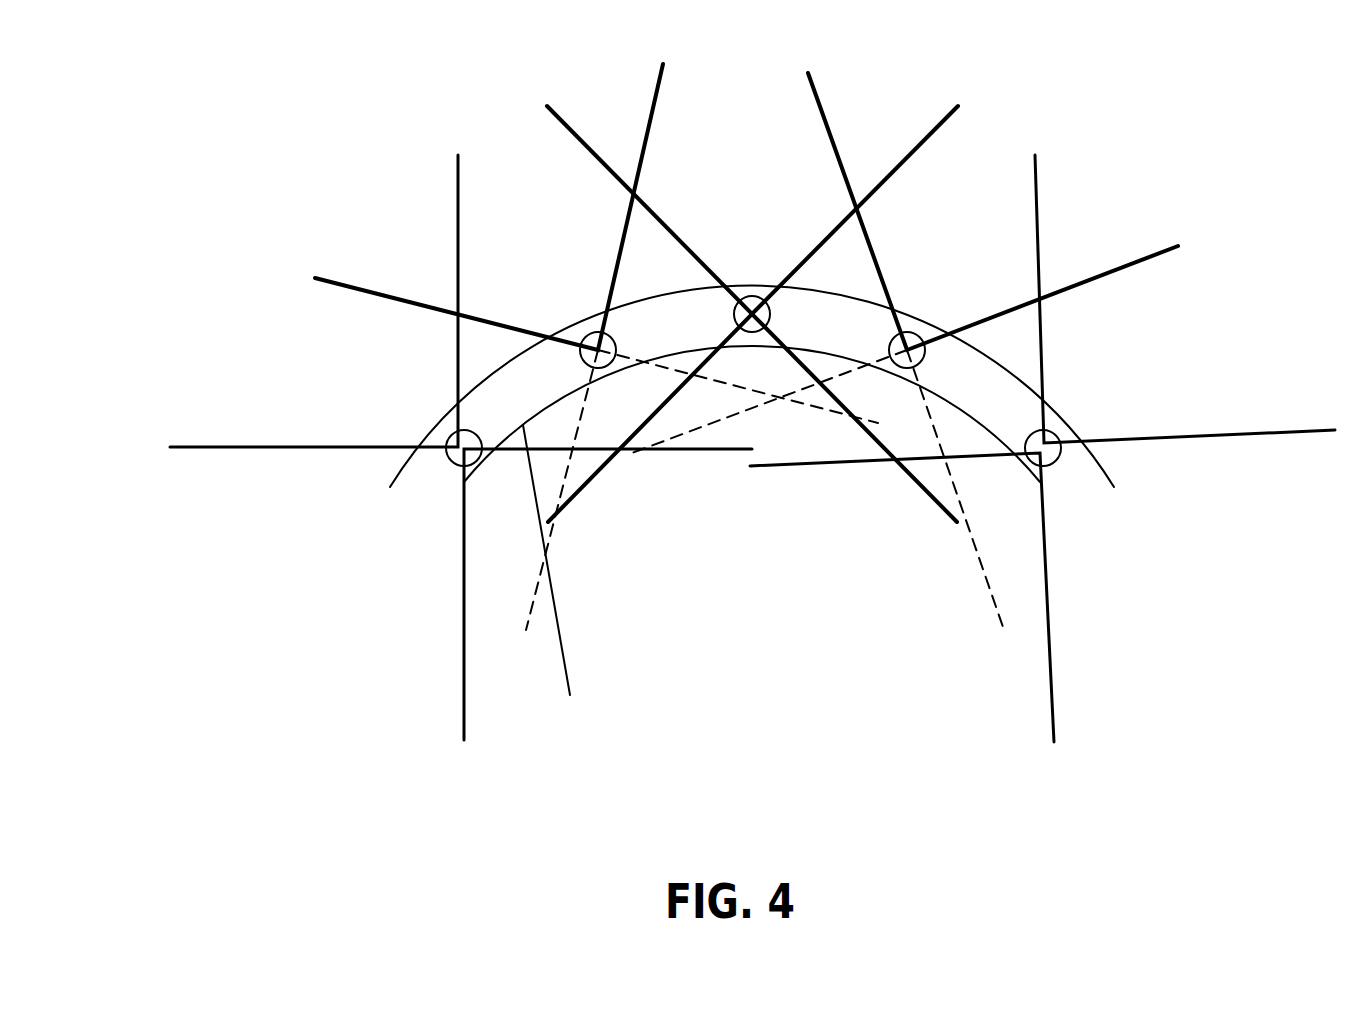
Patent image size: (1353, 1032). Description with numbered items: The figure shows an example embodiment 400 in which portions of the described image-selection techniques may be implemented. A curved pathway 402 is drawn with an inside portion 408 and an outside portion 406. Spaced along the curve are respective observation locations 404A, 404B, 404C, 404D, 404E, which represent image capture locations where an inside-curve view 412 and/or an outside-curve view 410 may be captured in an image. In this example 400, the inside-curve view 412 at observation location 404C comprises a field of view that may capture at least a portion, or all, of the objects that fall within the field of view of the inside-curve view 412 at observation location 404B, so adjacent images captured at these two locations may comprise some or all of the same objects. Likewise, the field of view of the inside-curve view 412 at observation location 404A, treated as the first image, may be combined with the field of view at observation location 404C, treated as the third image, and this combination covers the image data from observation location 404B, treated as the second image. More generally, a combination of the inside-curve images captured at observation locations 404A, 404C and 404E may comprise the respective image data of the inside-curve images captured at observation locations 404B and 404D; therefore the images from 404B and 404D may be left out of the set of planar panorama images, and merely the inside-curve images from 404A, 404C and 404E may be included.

The example embodiment 400 is at (309, 78).
The curved pathway 402 is at (437, 480).
The observation location 404A is at (447, 437).
The observation location 404B is at (593, 336).
The observation location 404C is at (753, 297).
The observation location 404D is at (910, 333).
The observation location 404E is at (1058, 432).
The outside portion 406 is at (490, 378).
The inside portion 408 is at (570, 695).
The outside-curve view 410 is at (210, 445).
The inside-curve view 412 is at (465, 713).